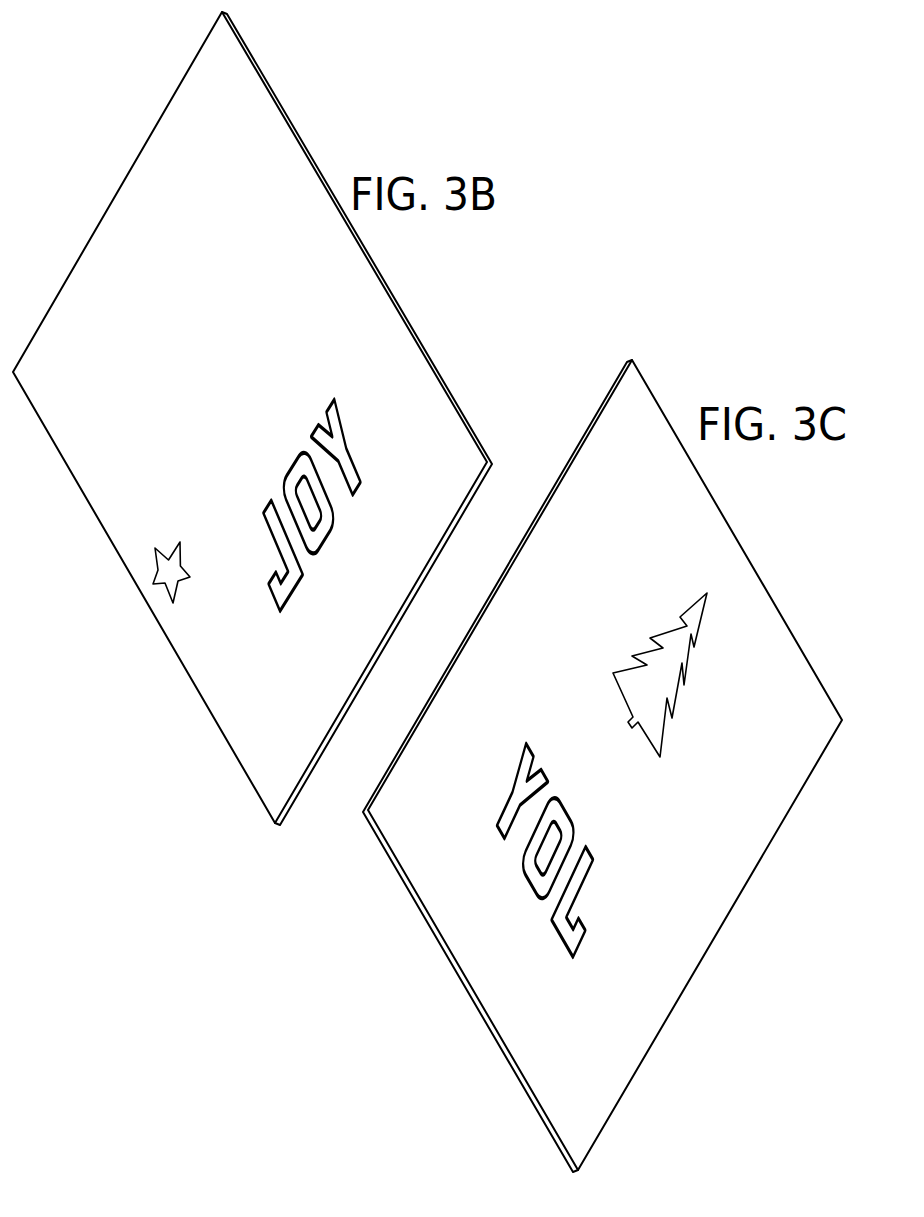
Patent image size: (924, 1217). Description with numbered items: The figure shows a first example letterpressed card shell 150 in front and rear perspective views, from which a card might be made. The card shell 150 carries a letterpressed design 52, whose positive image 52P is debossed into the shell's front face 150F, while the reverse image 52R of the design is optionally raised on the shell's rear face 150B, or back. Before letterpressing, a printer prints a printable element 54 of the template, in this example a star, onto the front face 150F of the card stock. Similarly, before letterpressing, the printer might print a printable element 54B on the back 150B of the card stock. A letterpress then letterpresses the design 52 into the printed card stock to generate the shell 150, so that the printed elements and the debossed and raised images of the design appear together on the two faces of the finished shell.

In FIG. 3B, the card shell 150 is at (252, 438).
In FIG. 3C, the card shell 150 is at (585, 766).
In FIG. 3B, the front face 150F is at (256, 766).
In FIG. 3C, the front face 150F is at (398, 866).
In FIG. 3B, the rear face 150B is at (285, 818).
In FIG. 3C, the rear face 150B is at (413, 832).
In FIG. 3B, the letterpressed design 52 is at (223, 543).
In FIG. 3B, the positive image 52P is at (265, 591).
In FIG. 3C, the reverse image 52R is at (510, 802).
In FIG. 3B, the printable element 54 is at (162, 583).
In FIG. 3C, the printable element 54B is at (620, 683).